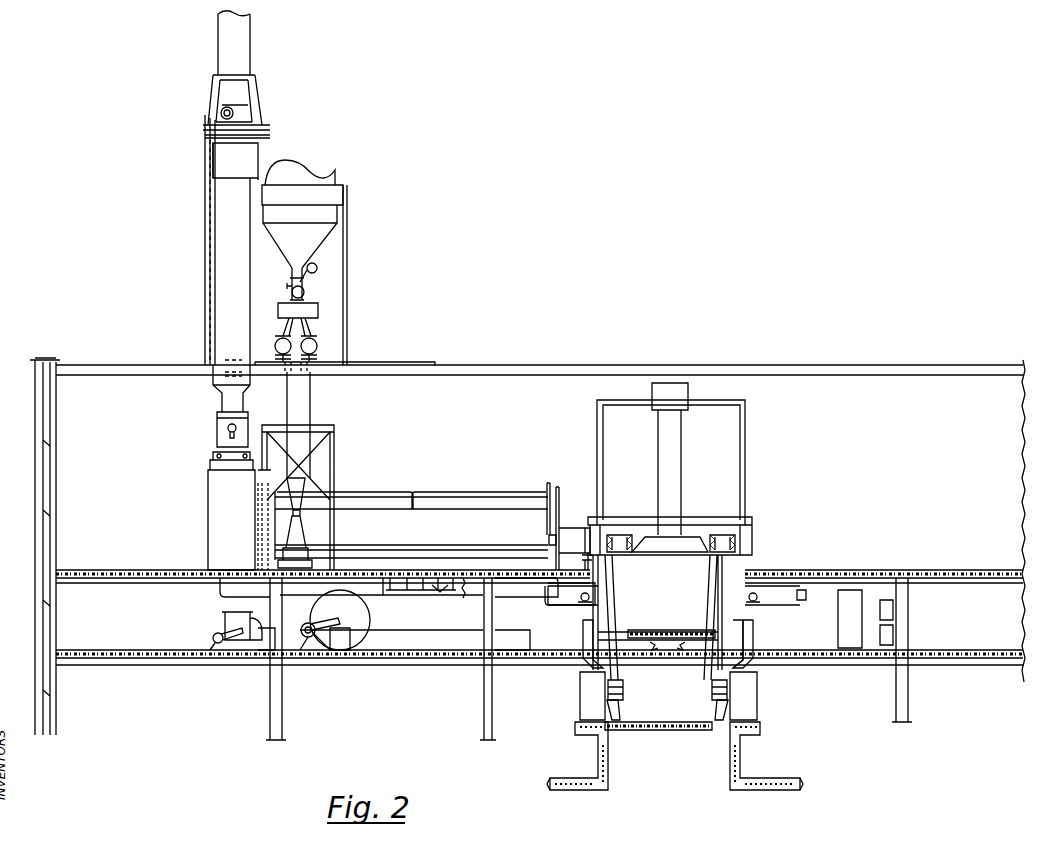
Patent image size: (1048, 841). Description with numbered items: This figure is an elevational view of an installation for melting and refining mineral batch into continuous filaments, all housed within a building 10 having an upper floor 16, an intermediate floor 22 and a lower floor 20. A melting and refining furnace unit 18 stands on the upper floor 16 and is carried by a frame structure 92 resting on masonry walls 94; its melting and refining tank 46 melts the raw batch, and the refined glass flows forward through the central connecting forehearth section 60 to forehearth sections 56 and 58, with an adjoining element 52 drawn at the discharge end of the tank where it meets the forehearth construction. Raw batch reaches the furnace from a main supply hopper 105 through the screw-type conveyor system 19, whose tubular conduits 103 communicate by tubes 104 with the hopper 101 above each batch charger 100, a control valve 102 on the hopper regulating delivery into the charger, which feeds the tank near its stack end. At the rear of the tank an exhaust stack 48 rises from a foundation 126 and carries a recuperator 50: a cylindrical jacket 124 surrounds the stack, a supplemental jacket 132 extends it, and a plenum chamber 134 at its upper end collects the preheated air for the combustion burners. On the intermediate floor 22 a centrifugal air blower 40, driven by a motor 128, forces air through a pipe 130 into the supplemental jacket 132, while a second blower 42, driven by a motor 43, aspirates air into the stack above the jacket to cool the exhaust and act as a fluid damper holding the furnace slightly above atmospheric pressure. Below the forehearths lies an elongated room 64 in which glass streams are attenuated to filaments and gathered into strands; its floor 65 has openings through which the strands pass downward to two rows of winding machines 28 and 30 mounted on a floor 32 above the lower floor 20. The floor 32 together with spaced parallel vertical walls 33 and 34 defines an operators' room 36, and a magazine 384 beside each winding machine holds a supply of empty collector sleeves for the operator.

The building 10 is at (33, 392).
The upper floor 16 is at (178, 572).
The melting and refining furnace unit 18 is at (405, 488).
The conveyor system 19 is at (320, 340).
The lower floor 20 is at (573, 778).
The intermediate floor 22 is at (165, 656).
The winding machines 28 is at (626, 700).
The winding machines 30 is at (710, 700).
The floor 32 is at (655, 710).
The vertical wall 33 is at (588, 624).
The vertical wall 34 is at (745, 622).
The room 36 is at (665, 722).
The magazine 384 is at (582, 642).
The air blower 40 is at (370, 620).
The blower 42 is at (224, 618).
The motor 43 is at (213, 637).
The melting and refining tank 46 is at (462, 534).
The exhaust stack 48 is at (215, 38).
The recuperator 50 is at (212, 231).
The discharge platform 52 is at (572, 528).
The forehearth section 56 is at (632, 537).
The forehearth section 58 is at (728, 538).
The central connecting forehearth section 60 is at (706, 537).
The room 64 is at (682, 588).
The floor 65 is at (688, 630).
The frame structure 92 is at (450, 592).
The masonry walls 94 is at (482, 627).
The batch charger 100 is at (290, 550).
The hopper 101 is at (313, 400).
The control valve 102 is at (300, 478).
The tubular conduit 103 is at (274, 343).
The tube 104 is at (274, 349).
The main supply hopper 105 is at (338, 176).
The jacket 124 is at (210, 283).
The foundation 126 is at (207, 487).
The motor 128 is at (300, 645).
The pipe 130 is at (216, 419).
The supplemental jacket 132 is at (216, 440).
The plenum chamber 134 is at (262, 150).